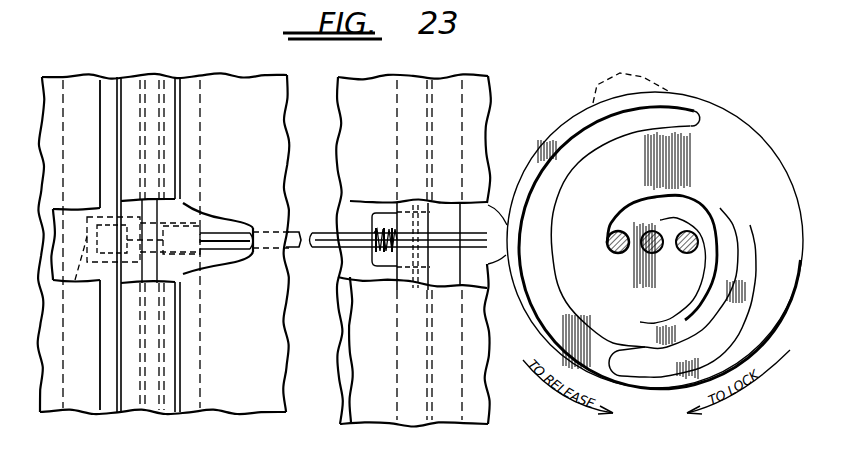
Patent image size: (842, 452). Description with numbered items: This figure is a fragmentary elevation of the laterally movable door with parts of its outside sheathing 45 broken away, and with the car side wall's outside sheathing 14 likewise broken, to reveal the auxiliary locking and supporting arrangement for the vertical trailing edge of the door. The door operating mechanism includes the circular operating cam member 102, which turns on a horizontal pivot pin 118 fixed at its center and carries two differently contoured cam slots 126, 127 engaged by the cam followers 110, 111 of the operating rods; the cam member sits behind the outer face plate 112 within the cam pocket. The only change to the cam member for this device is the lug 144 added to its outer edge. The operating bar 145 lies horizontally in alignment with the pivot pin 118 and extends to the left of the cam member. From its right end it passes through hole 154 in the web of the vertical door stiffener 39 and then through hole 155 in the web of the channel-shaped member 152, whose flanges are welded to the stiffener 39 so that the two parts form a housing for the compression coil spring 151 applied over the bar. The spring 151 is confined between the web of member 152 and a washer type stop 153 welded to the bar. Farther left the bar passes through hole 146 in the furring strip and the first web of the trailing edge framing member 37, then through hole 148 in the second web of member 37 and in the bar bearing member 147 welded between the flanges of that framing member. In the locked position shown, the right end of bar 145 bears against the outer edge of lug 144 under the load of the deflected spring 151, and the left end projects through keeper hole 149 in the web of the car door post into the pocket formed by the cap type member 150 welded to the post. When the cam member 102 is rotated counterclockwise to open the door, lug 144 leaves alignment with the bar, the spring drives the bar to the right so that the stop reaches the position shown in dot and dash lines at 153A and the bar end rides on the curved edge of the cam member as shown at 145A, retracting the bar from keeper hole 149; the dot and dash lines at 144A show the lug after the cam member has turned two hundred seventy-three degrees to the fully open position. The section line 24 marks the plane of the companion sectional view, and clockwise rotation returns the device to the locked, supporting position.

The outside sheathing 14 is at (88, 365).
The section line 24 is at (43, 220).
The vertical trailing edge framing member 37 is at (150, 397).
The vertical stiffener member 39 is at (394, 392).
The outside sheathing 45 is at (367, 357).
The operating cam member 102 is at (763, 140).
The cam follower 110 is at (698, 241).
The cam follower 111 is at (622, 232).
The outer face plate 112 is at (480, 412).
The pivot pin 118 is at (648, 252).
The cam slot 126 is at (677, 150).
The cam slot 127 is at (752, 303).
The lug 144 is at (508, 262).
The lug position 144A is at (643, 77).
The operating bar 145 is at (322, 230).
The bar position 145A is at (488, 243).
The hole 146 is at (178, 230).
The bar bearing member 147 is at (185, 268).
The hole 148 is at (150, 228).
The keeper hole 149 is at (133, 222).
The cap type member 150 is at (103, 262).
The compression coil spring 151 is at (392, 262).
The channel-shaped member 152 is at (390, 210).
The washer type stop 153 is at (403, 175).
The stop position 153A is at (413, 293).
The hole 154 is at (437, 227).
The hole 155 is at (338, 280).